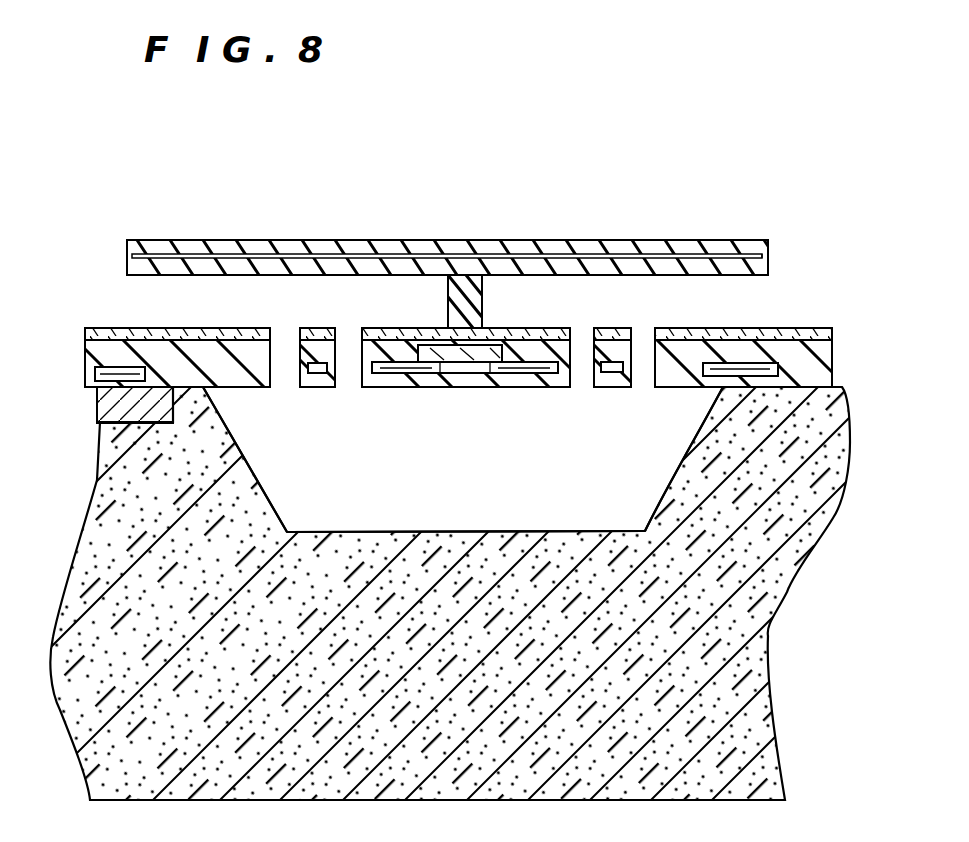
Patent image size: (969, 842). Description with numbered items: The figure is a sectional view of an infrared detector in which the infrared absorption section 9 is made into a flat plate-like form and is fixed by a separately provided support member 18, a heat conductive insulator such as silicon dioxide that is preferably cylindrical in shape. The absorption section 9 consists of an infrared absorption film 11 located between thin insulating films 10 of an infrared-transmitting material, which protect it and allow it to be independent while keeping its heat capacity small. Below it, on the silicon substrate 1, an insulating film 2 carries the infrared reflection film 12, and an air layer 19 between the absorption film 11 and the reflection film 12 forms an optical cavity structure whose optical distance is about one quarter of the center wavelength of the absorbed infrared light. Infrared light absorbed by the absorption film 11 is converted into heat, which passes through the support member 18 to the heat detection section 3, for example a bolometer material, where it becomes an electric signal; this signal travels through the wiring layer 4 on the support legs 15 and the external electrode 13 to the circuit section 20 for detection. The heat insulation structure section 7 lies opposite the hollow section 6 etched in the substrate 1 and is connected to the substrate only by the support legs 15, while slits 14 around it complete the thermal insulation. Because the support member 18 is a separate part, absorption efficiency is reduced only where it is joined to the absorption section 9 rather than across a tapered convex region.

The silicon substrate 1 is at (756, 655).
The insulating film 2 is at (836, 348).
The heat detection section 3 is at (473, 386).
The wiring layer 4 is at (735, 386).
The hollow section 6 is at (463, 502).
The heat insulation structure section 7 is at (442, 386).
The infrared absorption section 9 is at (650, 240).
The insulating film 10 is at (728, 257).
The infrared absorption film 11 is at (161, 256).
The infrared reflection film 12 is at (100, 328).
The external electrode 13 is at (96, 371).
The slits 14 is at (285, 378).
The support legs 15 is at (302, 352).
The support member 18 is at (443, 283).
The air layer 19 is at (152, 303).
The circuit section 20 is at (100, 457).